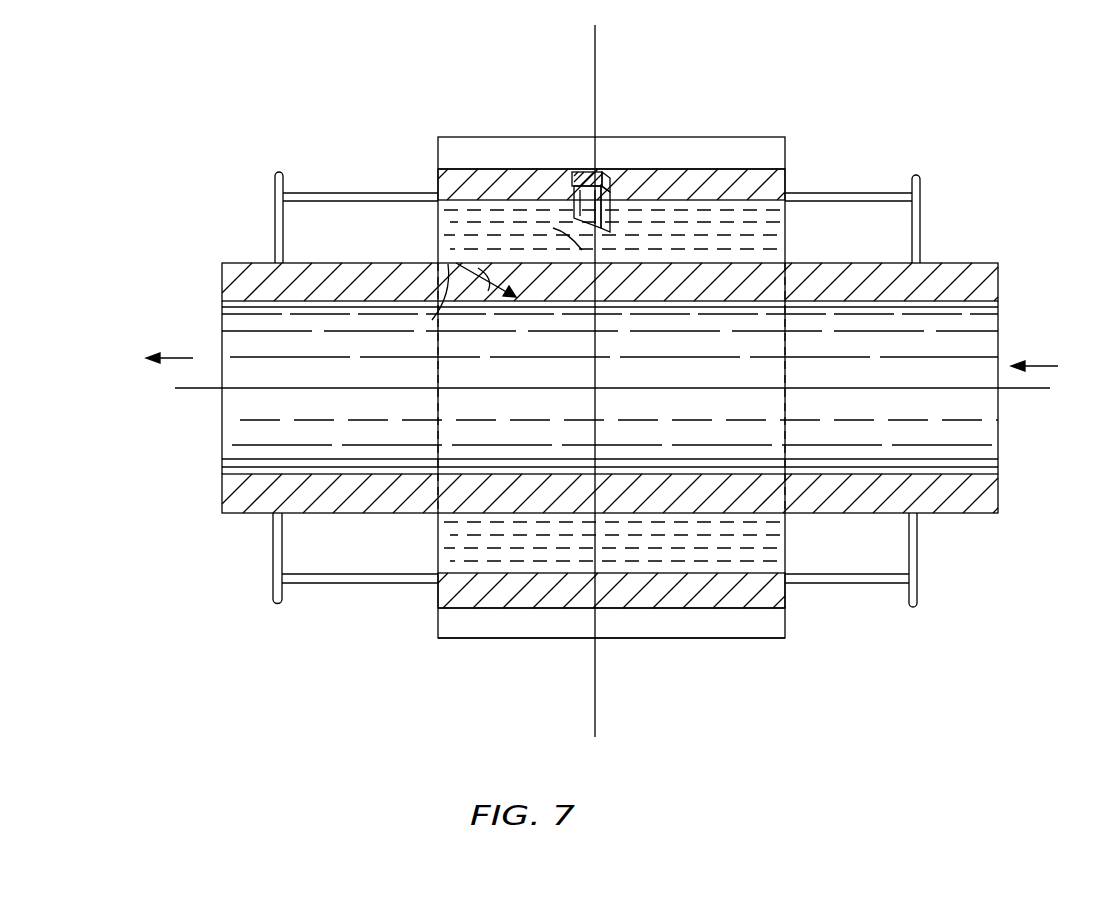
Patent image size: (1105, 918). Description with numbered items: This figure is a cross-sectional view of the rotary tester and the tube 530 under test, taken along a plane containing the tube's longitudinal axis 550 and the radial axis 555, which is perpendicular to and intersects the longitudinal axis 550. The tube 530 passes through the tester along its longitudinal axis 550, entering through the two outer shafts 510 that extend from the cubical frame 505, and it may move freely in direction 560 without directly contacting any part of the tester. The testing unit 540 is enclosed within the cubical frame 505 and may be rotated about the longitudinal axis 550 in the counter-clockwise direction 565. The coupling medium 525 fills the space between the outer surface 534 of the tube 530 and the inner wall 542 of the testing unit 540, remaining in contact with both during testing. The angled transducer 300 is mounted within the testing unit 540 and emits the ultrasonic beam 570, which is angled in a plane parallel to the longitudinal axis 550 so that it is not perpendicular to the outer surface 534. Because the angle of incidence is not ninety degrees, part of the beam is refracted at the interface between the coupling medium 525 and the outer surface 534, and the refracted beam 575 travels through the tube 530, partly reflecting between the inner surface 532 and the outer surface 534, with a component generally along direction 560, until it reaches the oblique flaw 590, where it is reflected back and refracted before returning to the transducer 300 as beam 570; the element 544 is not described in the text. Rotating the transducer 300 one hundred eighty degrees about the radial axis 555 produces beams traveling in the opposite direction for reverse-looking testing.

The transducer 300 is at (582, 170).
The cubical frame 505 is at (788, 137).
The outer shafts 510 is at (867, 192).
The coupling medium 525 is at (728, 560).
The tube 530 is at (309, 490).
The inner surface 532 is at (828, 474).
The outer surface 534 is at (866, 513).
The testing unit 540 is at (458, 190).
The inner wall 542 is at (468, 562).
The housing bottom wall 544 is at (512, 610).
The longitudinal axis 550 is at (185, 390).
The radial axis 555 is at (598, 62).
The direction 560 is at (188, 357).
The counter-clockwise direction 565 is at (688, 622).
The ultrasonic beam 570 is at (544, 227).
The refracted beam 575 is at (458, 268).
The oblique flaw 590 is at (432, 320).